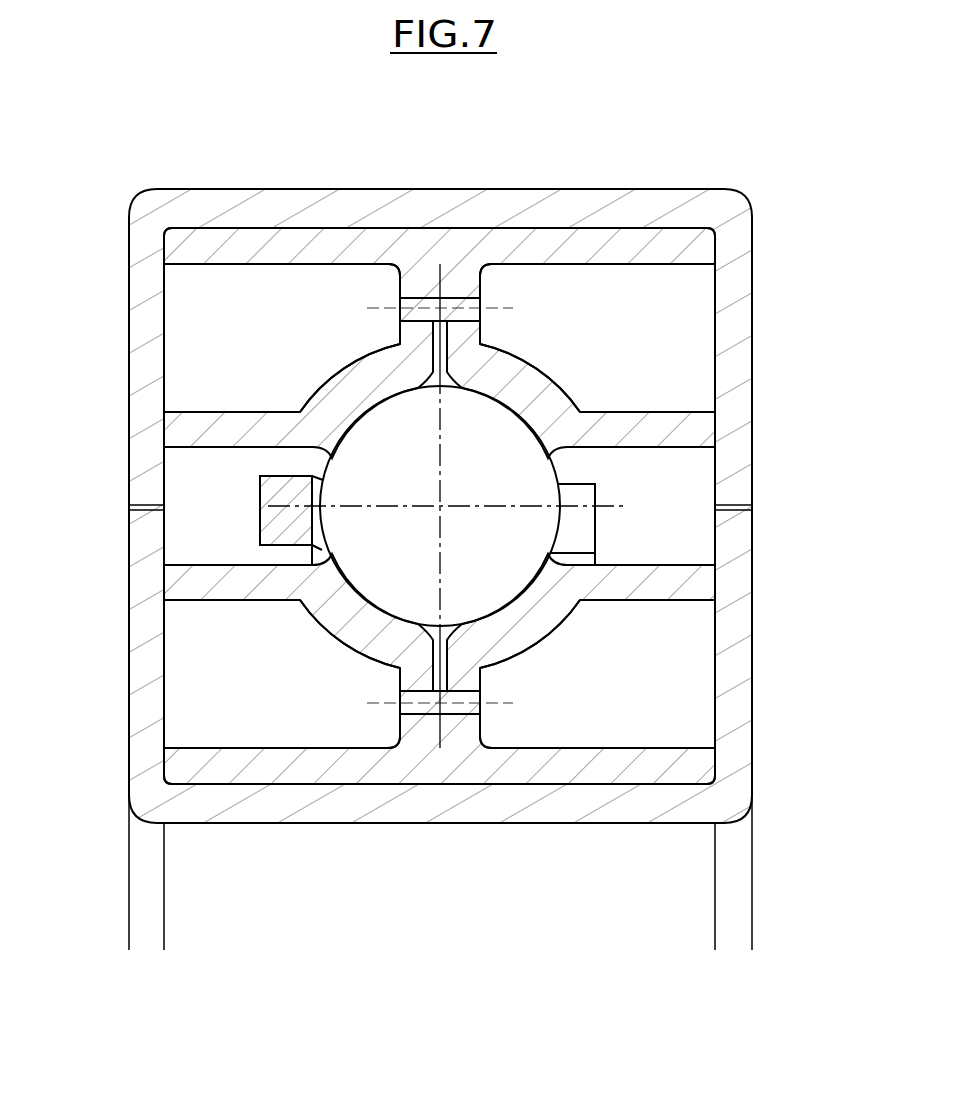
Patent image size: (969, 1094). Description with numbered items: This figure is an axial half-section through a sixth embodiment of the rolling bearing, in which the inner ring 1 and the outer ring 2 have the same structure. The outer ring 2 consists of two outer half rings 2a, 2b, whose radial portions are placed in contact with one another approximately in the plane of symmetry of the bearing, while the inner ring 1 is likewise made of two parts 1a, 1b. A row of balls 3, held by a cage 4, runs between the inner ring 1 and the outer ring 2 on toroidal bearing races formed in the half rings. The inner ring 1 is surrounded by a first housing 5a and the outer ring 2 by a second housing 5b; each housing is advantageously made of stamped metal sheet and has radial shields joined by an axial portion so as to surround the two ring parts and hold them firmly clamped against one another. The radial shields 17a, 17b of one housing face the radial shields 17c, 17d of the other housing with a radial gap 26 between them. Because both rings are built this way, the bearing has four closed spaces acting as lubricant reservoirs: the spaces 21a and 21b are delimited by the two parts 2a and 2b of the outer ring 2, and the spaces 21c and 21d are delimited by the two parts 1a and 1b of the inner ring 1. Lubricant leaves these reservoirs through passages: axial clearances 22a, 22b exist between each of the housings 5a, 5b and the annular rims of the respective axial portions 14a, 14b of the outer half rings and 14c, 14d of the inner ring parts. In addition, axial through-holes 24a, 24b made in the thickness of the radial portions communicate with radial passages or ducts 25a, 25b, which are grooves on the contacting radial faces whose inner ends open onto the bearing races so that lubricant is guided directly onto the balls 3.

The inner ring 1 is at (341, 789).
The part of inner ring 1a is at (618, 759).
The part of inner ring 1b is at (262, 759).
The outer ring 2 is at (589, 226).
The outer half ring 2a is at (618, 255).
The outer half ring 2b is at (262, 255).
The balls 3 is at (553, 470).
The cage 4 is at (279, 518).
The first housing 5a is at (441, 826).
The second housing 5b is at (441, 187).
The inner axial portion 14a is at (684, 425).
The inner axial portion 14b is at (200, 425).
The axial portion 14c is at (684, 592).
The axial portion 14d is at (200, 592).
The radial shield 17a is at (734, 337).
The radial shield 17b is at (143, 340).
The radial shield 17c is at (734, 672).
The radial shield 17d is at (143, 674).
The annular reservoir 21a is at (597, 304).
The annular reservoir 21b is at (282, 304).
The annular reservoir 21c is at (597, 708).
The annular reservoir 21d is at (282, 708).
The axial clearance 22a is at (718, 423).
The axial clearance 22b is at (165, 420).
The axial through-hole 24a is at (480, 321).
The axial through-hole 24b is at (400, 321).
The radial passage 25a is at (478, 348).
The radial passage 25b is at (402, 348).
The radial gap 26 is at (128, 507).